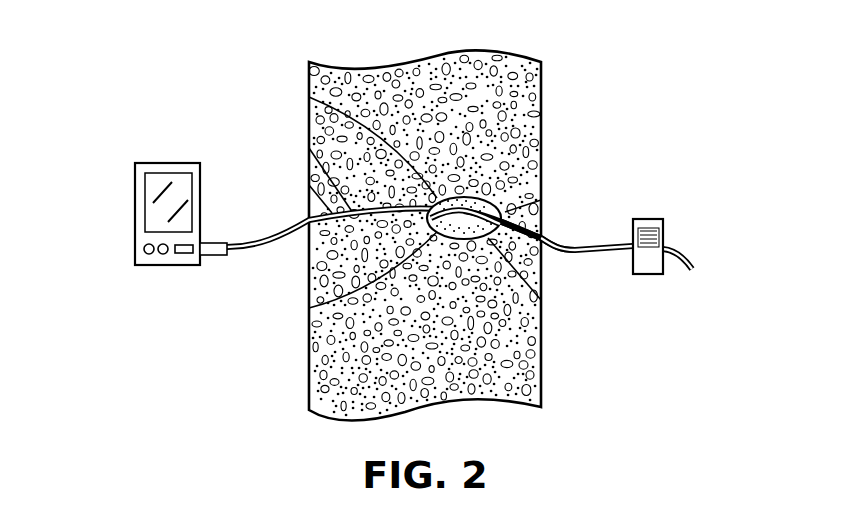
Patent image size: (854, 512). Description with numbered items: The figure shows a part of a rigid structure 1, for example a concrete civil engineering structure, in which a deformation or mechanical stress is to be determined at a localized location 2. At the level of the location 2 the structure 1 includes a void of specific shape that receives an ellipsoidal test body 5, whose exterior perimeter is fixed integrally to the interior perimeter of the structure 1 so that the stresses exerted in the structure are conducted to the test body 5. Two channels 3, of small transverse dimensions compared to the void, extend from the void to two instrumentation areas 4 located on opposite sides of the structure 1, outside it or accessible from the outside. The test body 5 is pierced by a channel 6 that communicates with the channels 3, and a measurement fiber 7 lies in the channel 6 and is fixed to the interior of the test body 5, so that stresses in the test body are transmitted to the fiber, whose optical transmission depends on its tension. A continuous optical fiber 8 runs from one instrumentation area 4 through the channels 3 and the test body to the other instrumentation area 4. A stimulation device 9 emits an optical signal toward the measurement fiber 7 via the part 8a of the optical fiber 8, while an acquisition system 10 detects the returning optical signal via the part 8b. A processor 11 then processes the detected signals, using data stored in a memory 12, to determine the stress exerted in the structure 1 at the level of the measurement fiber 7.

The structure 1 is at (493, 112).
The localized location 2 is at (475, 205).
The channel 3 is at (309, 185).
The instrumentation area 4 is at (160, 136).
The test body 5 is at (309, 97).
The channel 6 is at (541, 300).
The measurement fiber 7 is at (309, 308).
The continuous optical fiber 8 is at (242, 254).
The part of the optical fiber 8a is at (541, 232).
The part of the optical fiber 8b is at (309, 148).
The stimulation device 9 is at (657, 275).
The acquisition system 10 is at (216, 243).
The processor 11 is at (135, 241).
The memory 12 is at (178, 254).